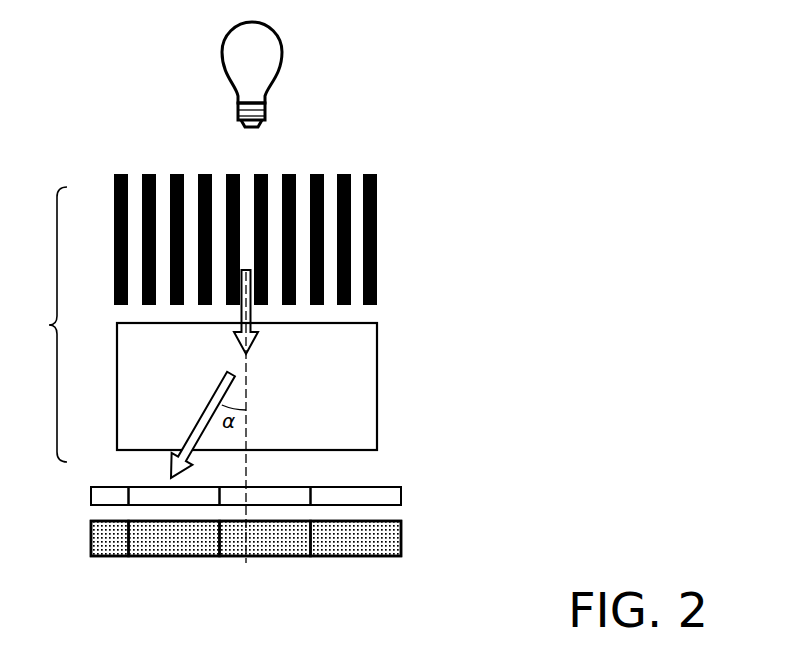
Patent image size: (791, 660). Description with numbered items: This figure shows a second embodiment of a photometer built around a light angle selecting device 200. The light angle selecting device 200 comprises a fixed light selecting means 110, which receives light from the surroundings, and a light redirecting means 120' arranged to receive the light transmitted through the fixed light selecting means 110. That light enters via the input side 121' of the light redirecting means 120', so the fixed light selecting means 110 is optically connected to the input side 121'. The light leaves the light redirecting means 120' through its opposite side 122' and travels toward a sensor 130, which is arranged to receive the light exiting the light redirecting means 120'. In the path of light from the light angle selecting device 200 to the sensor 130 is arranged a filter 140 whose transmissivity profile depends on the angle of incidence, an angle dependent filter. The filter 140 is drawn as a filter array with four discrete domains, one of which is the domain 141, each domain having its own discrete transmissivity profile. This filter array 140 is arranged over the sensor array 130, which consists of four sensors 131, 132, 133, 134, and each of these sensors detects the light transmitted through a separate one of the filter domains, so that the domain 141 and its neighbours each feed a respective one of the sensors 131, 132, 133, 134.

The fixed light selecting means 110 is at (377, 225).
The light redirecting means 120' is at (284, 386).
The input side 121' is at (284, 310).
The bottom surface of light guide plate 122' is at (284, 464).
The sensor 130 is at (420, 545).
The sensor 131 is at (105, 548).
The sensor 132 is at (197, 552).
The sensor 133 is at (293, 553).
The sensor 134 is at (392, 555).
The filter array 140 is at (422, 493).
The discrete domain 141 is at (90, 493).
The light angle selecting device 200 is at (37, 324).